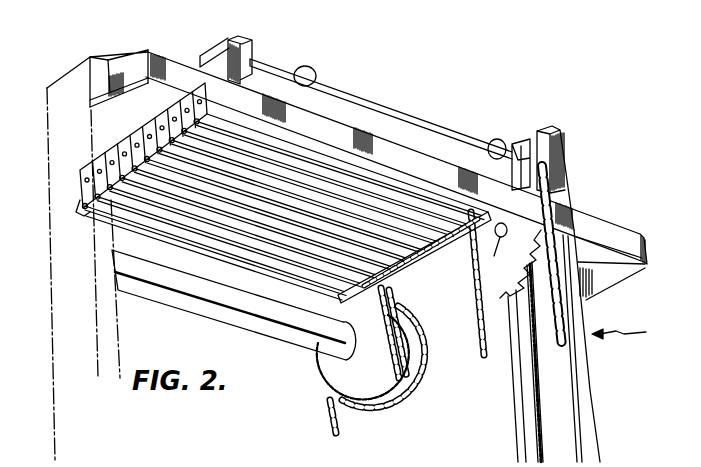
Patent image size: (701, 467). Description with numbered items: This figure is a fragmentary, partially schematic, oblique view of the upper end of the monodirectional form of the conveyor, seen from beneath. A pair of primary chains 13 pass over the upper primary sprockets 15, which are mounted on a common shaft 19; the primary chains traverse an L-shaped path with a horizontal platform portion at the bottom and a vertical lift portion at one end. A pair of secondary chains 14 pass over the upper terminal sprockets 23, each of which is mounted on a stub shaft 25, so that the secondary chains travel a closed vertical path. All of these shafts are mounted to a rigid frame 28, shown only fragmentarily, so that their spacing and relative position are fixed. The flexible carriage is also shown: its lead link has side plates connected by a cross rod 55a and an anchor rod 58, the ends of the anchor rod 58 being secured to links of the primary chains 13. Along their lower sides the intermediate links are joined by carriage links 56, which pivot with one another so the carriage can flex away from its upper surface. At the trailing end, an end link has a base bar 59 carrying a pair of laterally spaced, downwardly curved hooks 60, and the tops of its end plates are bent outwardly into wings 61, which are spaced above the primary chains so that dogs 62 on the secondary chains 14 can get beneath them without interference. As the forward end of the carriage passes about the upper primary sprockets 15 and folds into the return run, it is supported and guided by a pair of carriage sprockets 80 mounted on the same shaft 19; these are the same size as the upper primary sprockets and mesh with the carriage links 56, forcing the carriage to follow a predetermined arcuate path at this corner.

The primary chains 13 is at (403, 326).
The secondary chains 14 is at (568, 322).
The upper primary sprocket 15 is at (372, 393).
The common shaft 19 is at (159, 293).
The upper terminal sprockets 23 is at (480, 356).
The stub shaft 25 is at (501, 251).
The frame 28 is at (631, 331).
The cross rod 55a is at (186, 222).
The carriage link 56 is at (434, 262).
The anchor rod 58 is at (263, 258).
The base bar 59 is at (383, 100).
The hooks 60 is at (497, 139).
The wings 61 is at (244, 37).
The dogs 62 is at (563, 146).
The carriage sprockets 80 is at (319, 374).